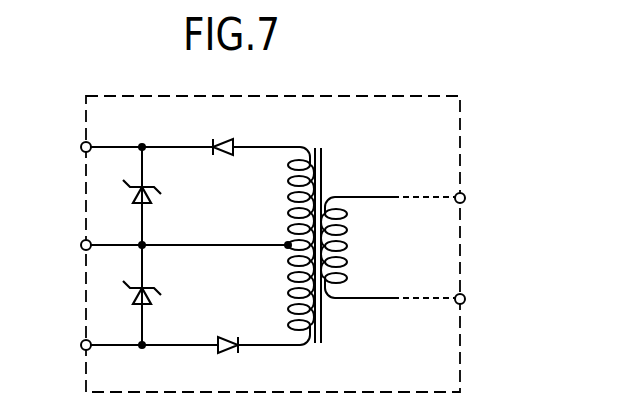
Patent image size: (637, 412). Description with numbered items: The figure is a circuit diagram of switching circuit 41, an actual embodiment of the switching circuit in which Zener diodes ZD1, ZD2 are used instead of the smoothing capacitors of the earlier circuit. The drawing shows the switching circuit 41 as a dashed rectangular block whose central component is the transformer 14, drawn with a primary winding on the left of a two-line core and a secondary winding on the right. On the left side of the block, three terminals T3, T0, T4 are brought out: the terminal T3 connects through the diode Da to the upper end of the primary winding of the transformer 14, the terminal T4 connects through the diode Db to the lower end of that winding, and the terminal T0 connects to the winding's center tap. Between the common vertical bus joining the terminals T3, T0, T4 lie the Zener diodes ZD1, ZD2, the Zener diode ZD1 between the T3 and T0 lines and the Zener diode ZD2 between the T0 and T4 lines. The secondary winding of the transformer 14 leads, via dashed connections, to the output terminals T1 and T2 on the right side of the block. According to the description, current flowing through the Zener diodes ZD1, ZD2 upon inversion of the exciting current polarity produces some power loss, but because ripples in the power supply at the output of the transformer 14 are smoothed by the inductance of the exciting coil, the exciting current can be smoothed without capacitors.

The transformer 14 is at (325, 157).
The switching circuit 41 is at (462, 138).
The terminal T1 is at (442, 199).
The terminal T2 is at (442, 300).
The terminal T3 is at (133, 149).
The terminal T0 is at (170, 247).
The terminal T4 is at (135, 347).
The diode Da is at (225, 159).
The diode Db is at (230, 358).
The Zener diode ZD1 is at (158, 195).
The Zener diode ZD2 is at (158, 296).